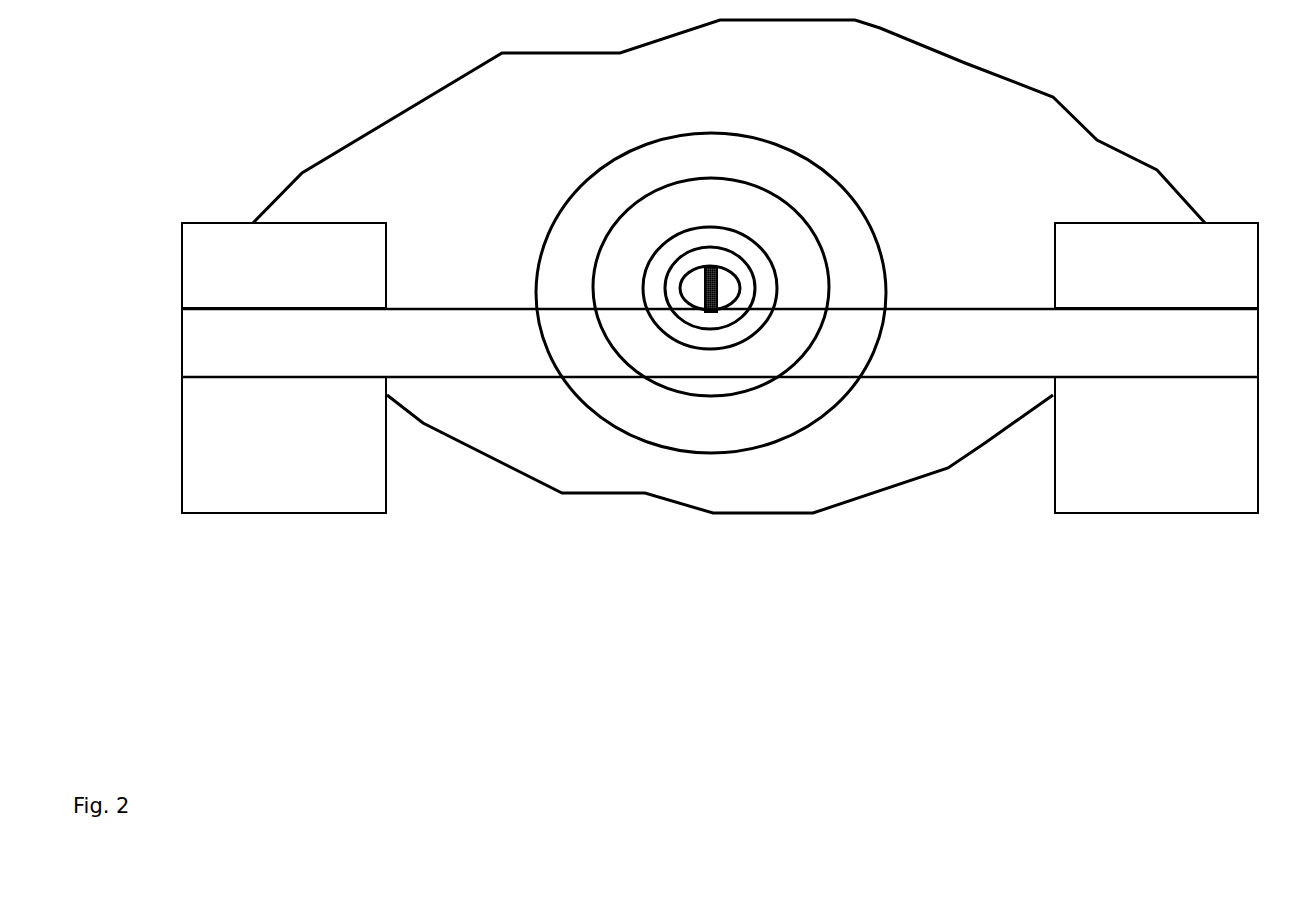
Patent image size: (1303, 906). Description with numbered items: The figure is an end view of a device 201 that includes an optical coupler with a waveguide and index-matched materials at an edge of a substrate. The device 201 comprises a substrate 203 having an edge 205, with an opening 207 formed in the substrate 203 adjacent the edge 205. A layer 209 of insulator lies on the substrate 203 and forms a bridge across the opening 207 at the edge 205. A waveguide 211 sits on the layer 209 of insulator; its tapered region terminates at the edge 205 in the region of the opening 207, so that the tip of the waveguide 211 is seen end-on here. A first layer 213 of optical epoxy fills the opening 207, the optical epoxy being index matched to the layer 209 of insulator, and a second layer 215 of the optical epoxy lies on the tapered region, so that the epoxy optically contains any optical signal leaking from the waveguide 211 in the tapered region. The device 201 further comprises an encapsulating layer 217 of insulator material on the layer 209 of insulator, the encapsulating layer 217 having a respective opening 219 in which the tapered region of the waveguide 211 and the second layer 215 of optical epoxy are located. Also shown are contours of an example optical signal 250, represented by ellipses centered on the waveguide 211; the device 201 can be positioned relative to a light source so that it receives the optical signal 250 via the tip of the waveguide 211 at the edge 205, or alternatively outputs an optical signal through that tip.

The device 201 is at (245, 618).
The substrate 203 is at (264, 457).
The edge 205 is at (184, 362).
The opening 207 is at (438, 513).
The layer of insulator 209 is at (251, 365).
The waveguide 211 is at (718, 288).
The first layer of optical epoxy 213 is at (481, 422).
The second layer of optical epoxy 215 is at (435, 260).
The encapsulating layer of insulator material 217 is at (233, 281).
The respective opening 219 is at (1033, 233).
The optical signal 250 is at (600, 173).